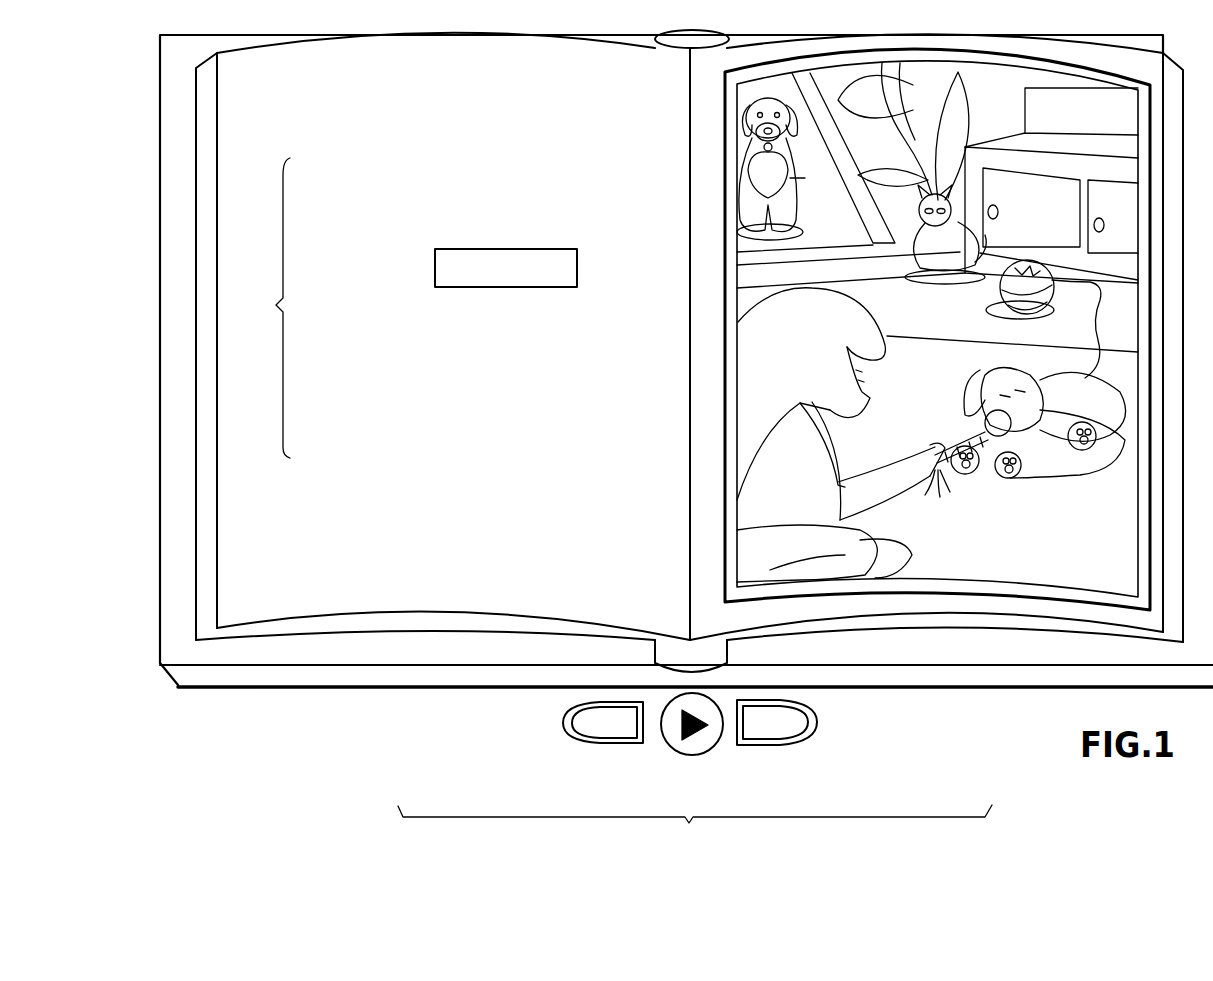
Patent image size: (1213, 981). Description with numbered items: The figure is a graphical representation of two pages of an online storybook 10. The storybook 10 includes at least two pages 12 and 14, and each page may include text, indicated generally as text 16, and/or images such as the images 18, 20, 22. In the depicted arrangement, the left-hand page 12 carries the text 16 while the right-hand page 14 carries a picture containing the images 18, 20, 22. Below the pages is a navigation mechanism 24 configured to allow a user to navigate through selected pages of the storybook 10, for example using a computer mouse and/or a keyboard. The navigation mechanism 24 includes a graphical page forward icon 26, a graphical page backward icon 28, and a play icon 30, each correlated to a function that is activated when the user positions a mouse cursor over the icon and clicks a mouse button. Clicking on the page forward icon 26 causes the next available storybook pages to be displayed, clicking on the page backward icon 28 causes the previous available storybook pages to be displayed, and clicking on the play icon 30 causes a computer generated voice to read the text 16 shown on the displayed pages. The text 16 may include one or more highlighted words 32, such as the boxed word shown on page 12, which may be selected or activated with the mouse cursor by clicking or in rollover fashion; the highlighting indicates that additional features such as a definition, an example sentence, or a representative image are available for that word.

The online storybook 10 is at (142, 91).
The page 12 is at (298, 563).
The page 14 is at (910, 338).
The text 16 is at (442, 308).
The image 18 is at (872, 309).
The image 20 is at (967, 393).
The image 22 is at (757, 162).
The navigation mechanism 24 is at (695, 775).
The page forward icon 26 is at (790, 746).
The page backward icon 28 is at (600, 744).
The play icon 30 is at (713, 748).
The highlighted word 32 is at (578, 268).